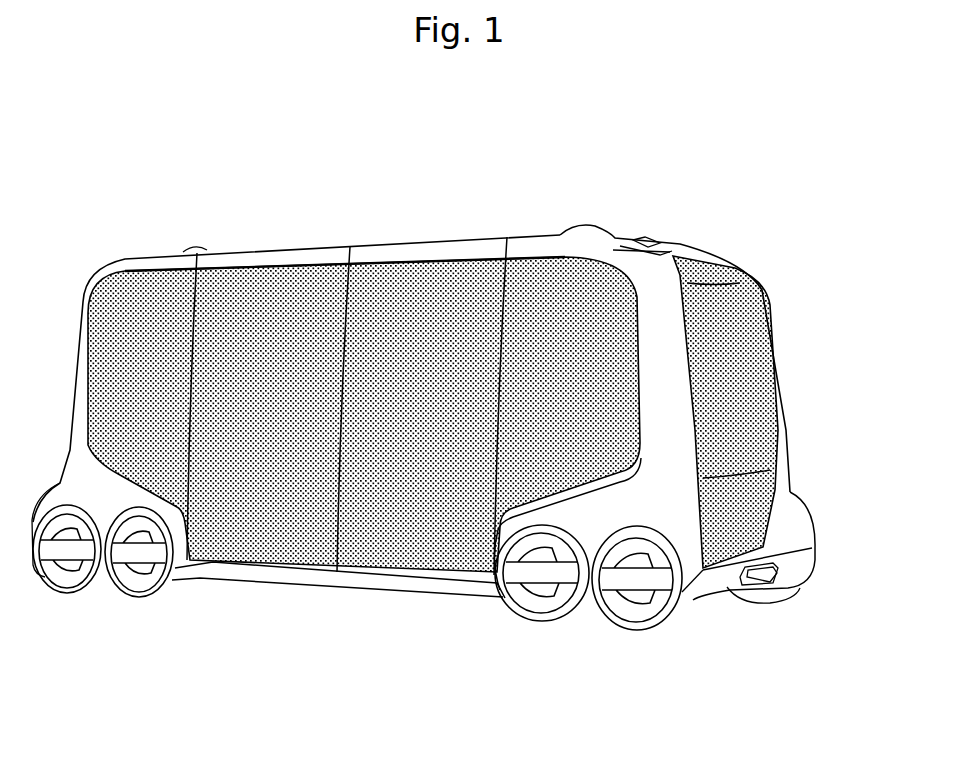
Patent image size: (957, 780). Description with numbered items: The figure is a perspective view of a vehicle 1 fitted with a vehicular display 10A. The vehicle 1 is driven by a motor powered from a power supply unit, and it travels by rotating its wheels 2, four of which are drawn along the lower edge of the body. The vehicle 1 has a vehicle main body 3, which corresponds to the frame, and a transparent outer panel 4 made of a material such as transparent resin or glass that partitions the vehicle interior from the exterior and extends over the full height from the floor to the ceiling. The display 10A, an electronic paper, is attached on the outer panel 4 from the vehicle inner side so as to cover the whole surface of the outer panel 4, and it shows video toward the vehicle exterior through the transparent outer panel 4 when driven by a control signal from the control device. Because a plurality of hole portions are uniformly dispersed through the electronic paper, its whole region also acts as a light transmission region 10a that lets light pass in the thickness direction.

The vehicle 1 is at (756, 131).
The wheels 2 is at (67, 585).
The vehicle main body 3 is at (633, 267).
The transparent outer panel 4 is at (425, 297).
The vehicular display 10A is at (278, 291).
The light transmission region 10a is at (372, 497).